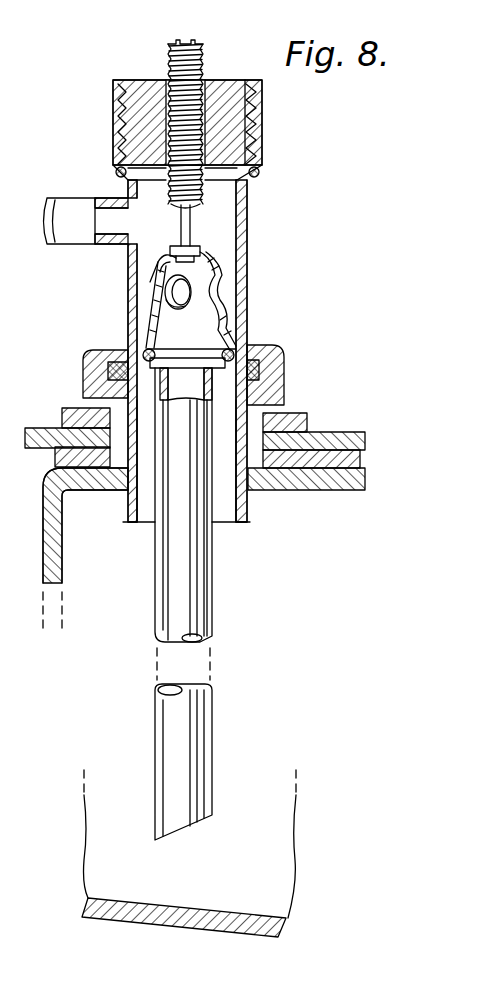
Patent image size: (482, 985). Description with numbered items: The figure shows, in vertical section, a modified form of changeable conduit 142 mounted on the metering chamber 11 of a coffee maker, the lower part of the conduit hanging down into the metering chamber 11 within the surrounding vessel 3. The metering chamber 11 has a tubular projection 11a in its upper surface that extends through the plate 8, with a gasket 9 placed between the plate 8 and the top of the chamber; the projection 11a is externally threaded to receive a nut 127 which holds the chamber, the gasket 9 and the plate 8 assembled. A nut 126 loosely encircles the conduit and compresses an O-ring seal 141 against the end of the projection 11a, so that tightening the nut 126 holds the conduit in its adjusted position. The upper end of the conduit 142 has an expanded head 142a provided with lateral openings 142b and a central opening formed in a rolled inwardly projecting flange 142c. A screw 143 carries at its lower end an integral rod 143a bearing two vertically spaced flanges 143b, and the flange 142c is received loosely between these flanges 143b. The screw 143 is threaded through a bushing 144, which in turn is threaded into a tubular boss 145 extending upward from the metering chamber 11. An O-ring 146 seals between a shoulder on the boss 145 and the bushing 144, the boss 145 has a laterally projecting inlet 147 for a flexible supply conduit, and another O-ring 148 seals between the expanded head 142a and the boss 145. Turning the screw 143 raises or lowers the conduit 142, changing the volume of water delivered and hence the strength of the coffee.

The pressure vessel 3 is at (5, 549).
The plate 8 is at (373, 432).
The gasket 9 is at (365, 455).
The metering chamber 11 is at (44, 523).
The tubular projection 11a is at (110, 380).
The nut 126 is at (88, 370).
The nut 127 is at (63, 416).
The O-ring seal 141 is at (122, 348).
The changeable conduit 142 is at (197, 589).
The expanded head 142a is at (214, 327).
The lateral openings 142b is at (160, 305).
The rolled inwardly projecting flange 142c is at (200, 251).
The screw 143 is at (173, 62).
The integral rod 143a is at (188, 220).
The vertically spaced flanges 143b is at (157, 266).
The bushing 144 is at (216, 108).
The tubular projection (boss) 145 is at (262, 143).
The O-ring 146 is at (244, 173).
The laterally projecting inlet 147 is at (72, 202).
The O-ring 148 is at (240, 349).